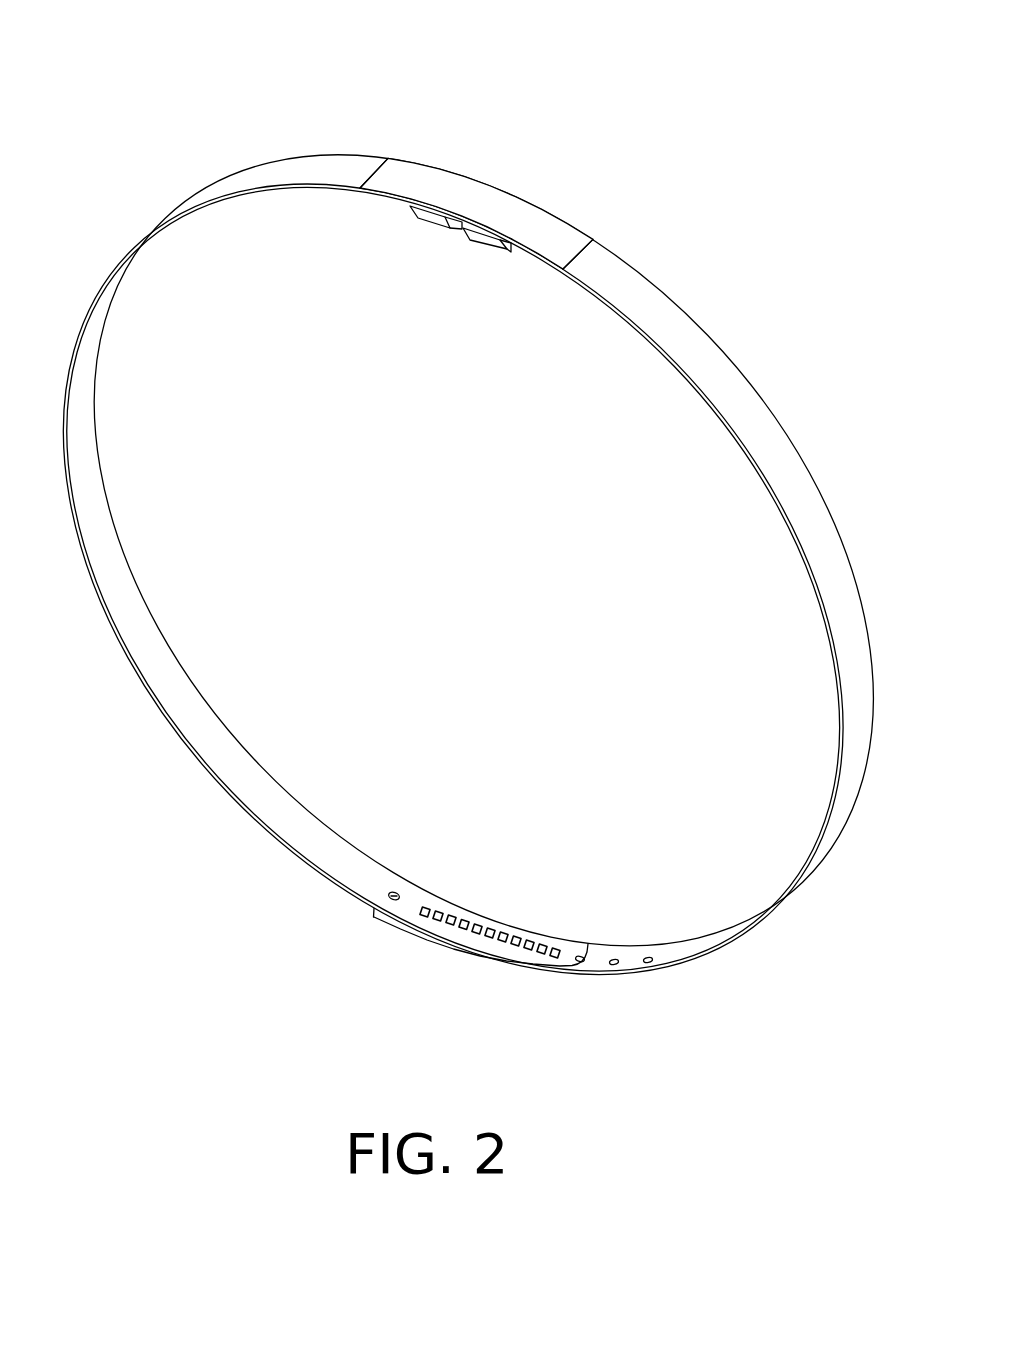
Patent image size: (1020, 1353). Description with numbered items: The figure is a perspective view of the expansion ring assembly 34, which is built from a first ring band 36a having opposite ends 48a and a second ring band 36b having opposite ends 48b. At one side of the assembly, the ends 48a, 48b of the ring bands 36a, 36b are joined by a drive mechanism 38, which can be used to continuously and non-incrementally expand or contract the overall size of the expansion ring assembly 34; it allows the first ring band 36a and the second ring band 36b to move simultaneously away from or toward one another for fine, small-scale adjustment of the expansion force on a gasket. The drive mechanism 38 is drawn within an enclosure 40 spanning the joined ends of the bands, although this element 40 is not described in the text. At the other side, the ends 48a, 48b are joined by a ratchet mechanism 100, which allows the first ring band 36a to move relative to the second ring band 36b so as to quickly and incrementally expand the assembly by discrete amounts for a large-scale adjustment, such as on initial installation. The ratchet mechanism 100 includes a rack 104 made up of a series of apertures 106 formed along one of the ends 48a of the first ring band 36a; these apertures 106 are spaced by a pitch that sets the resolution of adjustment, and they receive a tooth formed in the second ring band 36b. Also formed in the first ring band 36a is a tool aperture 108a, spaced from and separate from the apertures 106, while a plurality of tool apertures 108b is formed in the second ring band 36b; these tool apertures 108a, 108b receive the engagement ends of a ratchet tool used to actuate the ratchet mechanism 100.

The expansion ring assembly 34 is at (487, 84).
The first ring band 36a is at (137, 612).
The second ring band 36b is at (773, 426).
The drive mechanism 38 is at (445, 215).
The clasp 40 is at (530, 212).
The opposite ends of first ring band 48a is at (352, 180).
The opposite ends of second ring band 48b is at (604, 257).
The ratchet mechanism 100 is at (463, 868).
The rack 104 is at (451, 943).
The apertures 106 is at (520, 954).
The tool aperture 108a is at (550, 956).
The tool apertures 108b is at (647, 963).